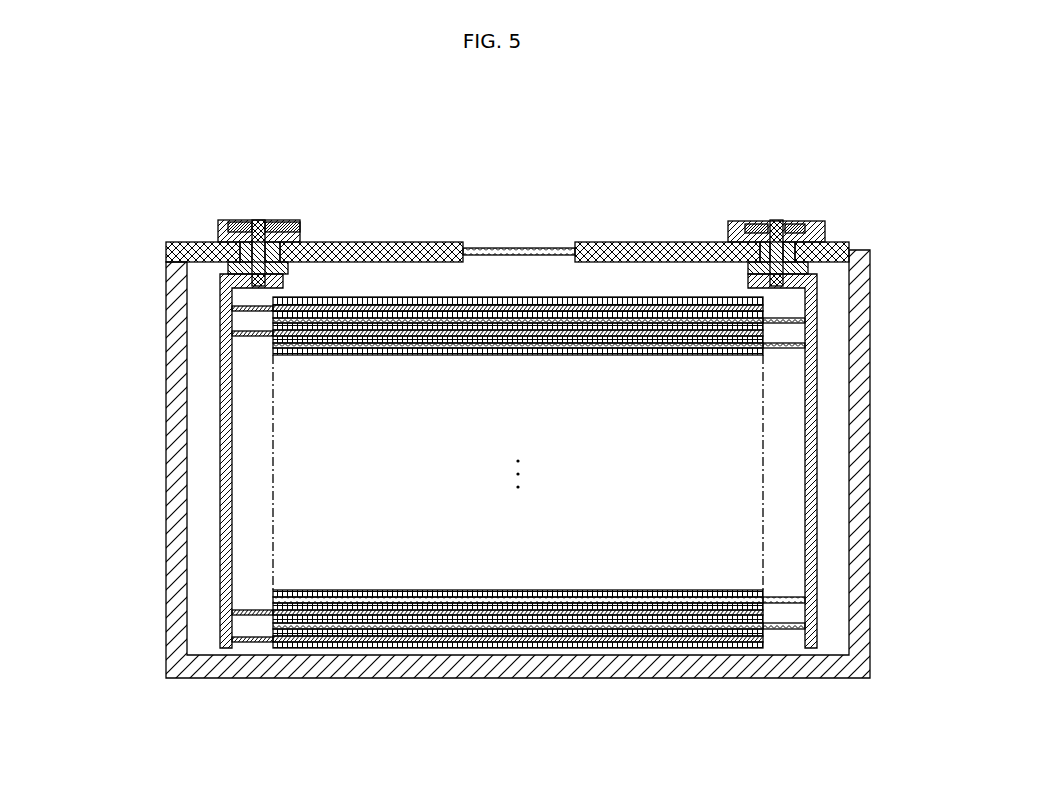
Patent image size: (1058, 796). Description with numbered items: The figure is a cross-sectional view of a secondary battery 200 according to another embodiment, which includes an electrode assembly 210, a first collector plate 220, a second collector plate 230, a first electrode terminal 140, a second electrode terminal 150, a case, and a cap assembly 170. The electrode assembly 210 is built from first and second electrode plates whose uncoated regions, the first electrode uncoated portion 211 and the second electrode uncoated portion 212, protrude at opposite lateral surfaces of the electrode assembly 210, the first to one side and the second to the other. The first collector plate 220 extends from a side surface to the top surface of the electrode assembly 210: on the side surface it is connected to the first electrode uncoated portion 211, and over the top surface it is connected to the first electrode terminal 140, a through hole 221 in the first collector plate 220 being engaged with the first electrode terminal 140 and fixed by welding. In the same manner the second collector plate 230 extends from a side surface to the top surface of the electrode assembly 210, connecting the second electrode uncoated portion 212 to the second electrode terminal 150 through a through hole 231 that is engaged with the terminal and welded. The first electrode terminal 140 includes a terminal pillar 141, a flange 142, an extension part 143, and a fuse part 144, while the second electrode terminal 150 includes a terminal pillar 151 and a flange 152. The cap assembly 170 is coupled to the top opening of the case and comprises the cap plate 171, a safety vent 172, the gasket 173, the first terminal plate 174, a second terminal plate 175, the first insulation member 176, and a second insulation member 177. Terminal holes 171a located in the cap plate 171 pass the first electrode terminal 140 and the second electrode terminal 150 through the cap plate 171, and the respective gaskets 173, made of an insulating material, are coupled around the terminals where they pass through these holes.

The secondary battery 200 is at (90, 131).
The first electrode terminal 140 is at (859, 200).
The terminal pillar 141 is at (823, 253).
The flange 142 is at (868, 248).
The extension part 143 is at (783, 232).
The fuse part 144 is at (813, 265).
The second electrode terminal 150 is at (263, 236).
The terminal pillar 151 is at (232, 250).
The flange 152 is at (232, 267).
The cap assembly 170 is at (528, 217).
The cap plate 171 is at (605, 242).
The terminal hole 171a is at (262, 232).
The safety vent 172 is at (535, 248).
The gasket 173 is at (292, 244).
The first terminal plate 174 is at (757, 228).
The second terminal plate 175 is at (242, 222).
The first insulation member 176 is at (728, 229).
The second insulation member 177 is at (219, 221).
The electrode assembly 210 is at (555, 648).
The first electrode uncoated portion 211 is at (782, 632).
The second electrode uncoated portion 212 is at (253, 648).
The first collector plate 220 is at (813, 293).
The through hole 221 is at (773, 288).
The second collector plate 230 is at (222, 290).
The through hole 231 is at (263, 288).